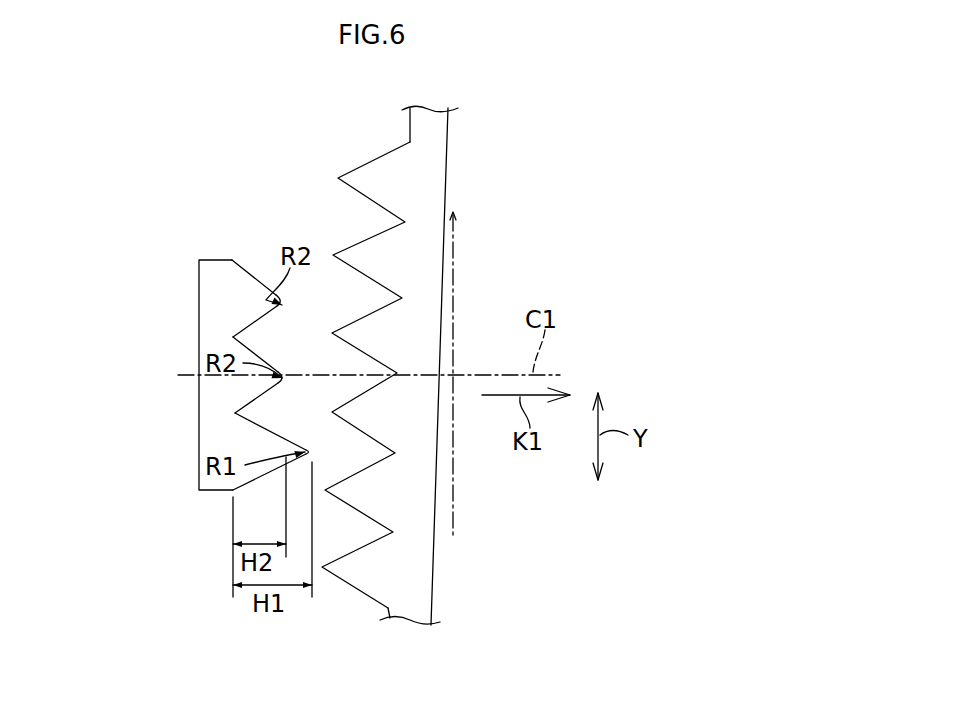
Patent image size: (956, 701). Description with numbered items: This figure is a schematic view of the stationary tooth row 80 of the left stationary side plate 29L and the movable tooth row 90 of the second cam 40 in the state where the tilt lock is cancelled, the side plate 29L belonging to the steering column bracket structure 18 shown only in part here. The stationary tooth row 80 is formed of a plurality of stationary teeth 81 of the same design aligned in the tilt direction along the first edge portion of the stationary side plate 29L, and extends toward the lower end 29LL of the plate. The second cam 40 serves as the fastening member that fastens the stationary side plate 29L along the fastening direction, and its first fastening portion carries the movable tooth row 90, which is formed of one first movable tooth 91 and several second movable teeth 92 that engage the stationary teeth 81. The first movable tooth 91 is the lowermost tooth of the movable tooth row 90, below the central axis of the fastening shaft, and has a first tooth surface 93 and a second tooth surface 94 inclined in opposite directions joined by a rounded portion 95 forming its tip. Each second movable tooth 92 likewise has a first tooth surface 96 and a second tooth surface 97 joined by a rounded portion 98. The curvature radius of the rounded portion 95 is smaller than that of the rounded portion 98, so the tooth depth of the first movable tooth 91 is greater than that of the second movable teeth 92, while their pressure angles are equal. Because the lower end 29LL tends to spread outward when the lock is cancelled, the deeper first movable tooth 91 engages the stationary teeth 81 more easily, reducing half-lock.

The rotor core 18 is at (465, 128).
The stationary side plate 29L is at (448, 160).
The lower end 29LL is at (420, 605).
The stationary tooth row 80 is at (365, 167).
The stationary tooth 81 is at (362, 180).
The second cam 40 is at (210, 262).
The movable tooth row 90 is at (120, 315).
The first movable tooth 91 is at (240, 477).
The second movable tooth 92 is at (234, 314).
The first tooth surface 93 is at (267, 430).
The second tooth surface 94 is at (256, 481).
The rounded portion 95 is at (314, 452).
The first tooth surface 96 is at (253, 268).
The second tooth surface 97 is at (262, 326).
The rounded portion 98 is at (285, 299).